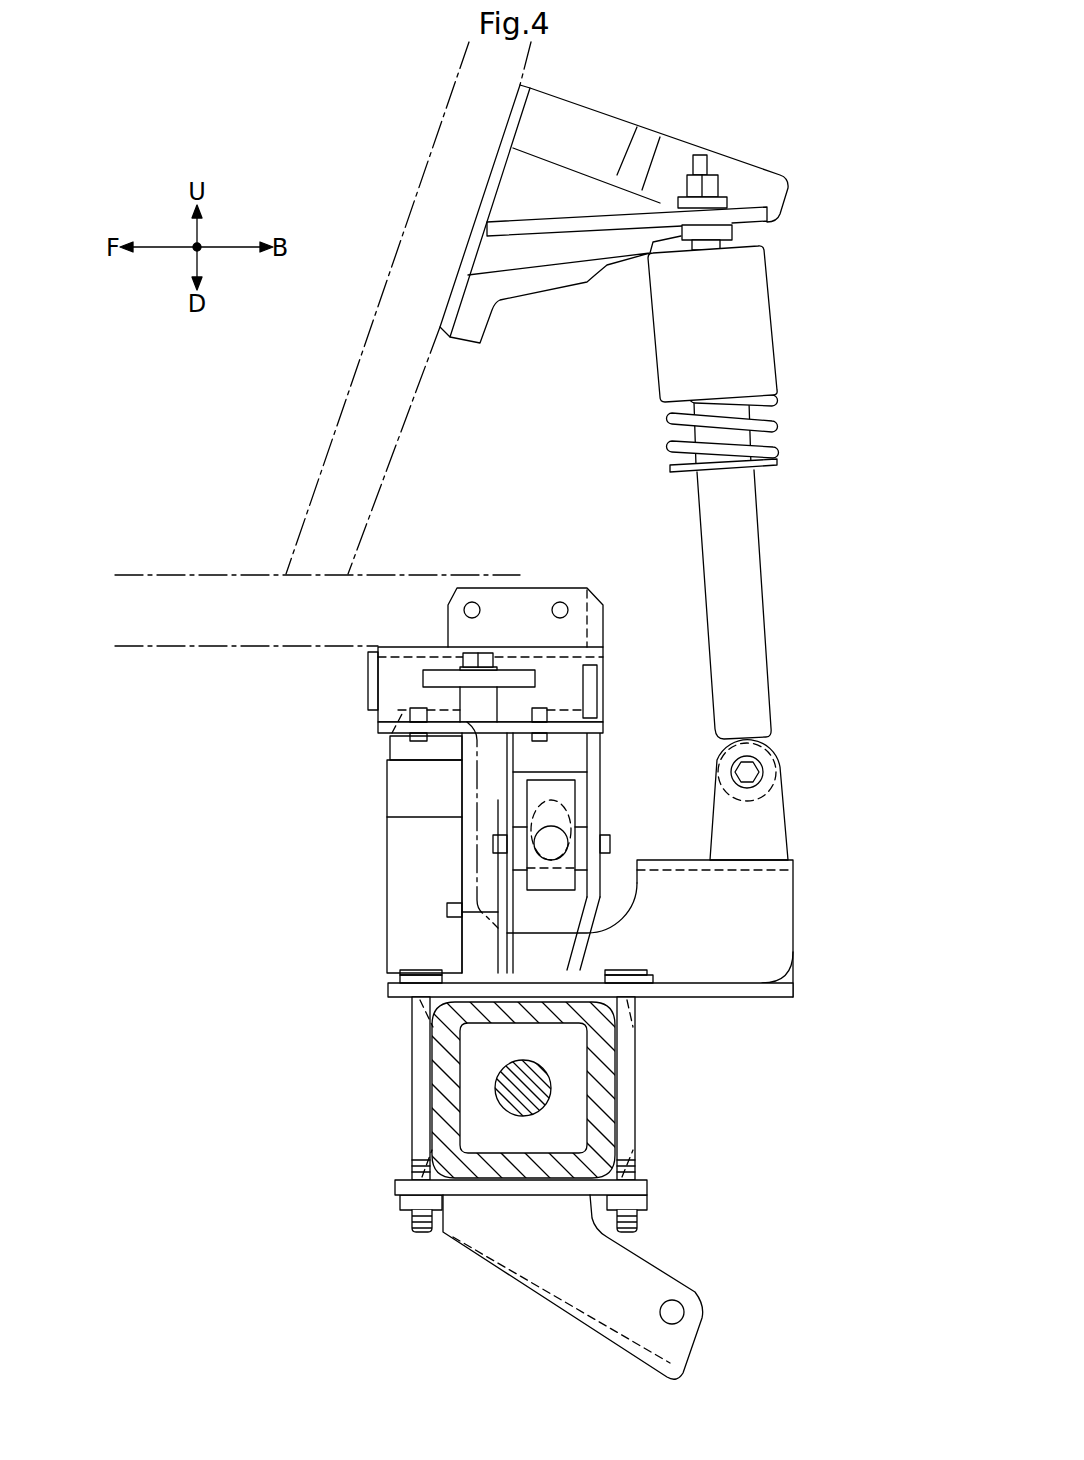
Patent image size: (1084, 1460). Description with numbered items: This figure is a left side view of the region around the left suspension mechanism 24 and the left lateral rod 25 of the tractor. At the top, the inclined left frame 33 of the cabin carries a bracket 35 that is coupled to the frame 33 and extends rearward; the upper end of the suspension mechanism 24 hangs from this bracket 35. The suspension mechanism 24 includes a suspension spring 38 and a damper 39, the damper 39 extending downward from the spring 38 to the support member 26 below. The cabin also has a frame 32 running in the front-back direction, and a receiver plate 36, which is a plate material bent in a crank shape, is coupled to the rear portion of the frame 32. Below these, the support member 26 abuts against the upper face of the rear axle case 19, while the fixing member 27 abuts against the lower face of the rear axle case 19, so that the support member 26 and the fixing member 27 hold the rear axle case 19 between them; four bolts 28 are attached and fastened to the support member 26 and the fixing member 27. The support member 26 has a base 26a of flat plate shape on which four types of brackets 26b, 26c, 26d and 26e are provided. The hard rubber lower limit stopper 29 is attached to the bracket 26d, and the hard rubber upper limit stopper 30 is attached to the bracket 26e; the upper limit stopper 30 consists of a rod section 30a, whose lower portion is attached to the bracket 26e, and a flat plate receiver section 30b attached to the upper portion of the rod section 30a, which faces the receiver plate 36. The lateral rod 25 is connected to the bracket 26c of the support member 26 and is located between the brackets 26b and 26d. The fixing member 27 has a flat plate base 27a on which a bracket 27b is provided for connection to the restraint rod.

The frame 33 is at (420, 195).
The bracket 35 is at (760, 205).
The suspension mechanism 24 is at (782, 326).
The suspension spring 38 is at (773, 428).
The damper 39 is at (757, 581).
The frame 32 is at (522, 575).
The upper limit stopper 30 is at (466, 780).
The rod section 30a is at (467, 835).
The receiver section 30b is at (440, 677).
The receiver plate 36 is at (395, 697).
The lower limit stopper 29 is at (400, 748).
The support member 26 is at (596, 766).
The base 26a is at (733, 997).
The bracket 26b is at (783, 916).
The bracket 26c is at (510, 915).
The bracket 26d is at (400, 795).
The bracket 26e is at (450, 912).
The lateral rod 25 is at (557, 845).
The bolt 28 is at (417, 1050).
The rear axle case 19 is at (440, 1097).
The base 27a is at (648, 1188).
The fixing member 27 is at (526, 1287).
The bracket 27b is at (510, 1277).